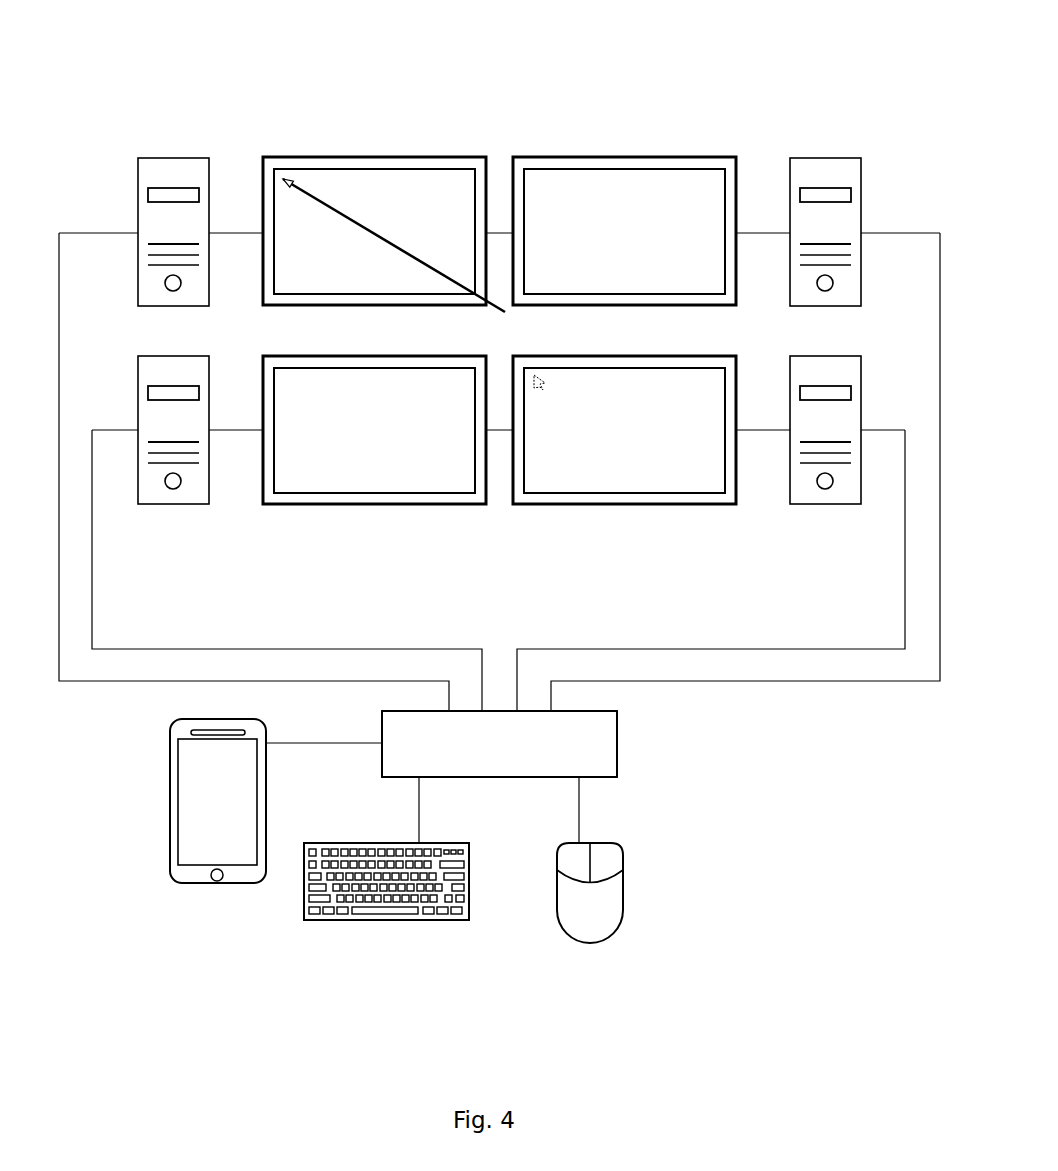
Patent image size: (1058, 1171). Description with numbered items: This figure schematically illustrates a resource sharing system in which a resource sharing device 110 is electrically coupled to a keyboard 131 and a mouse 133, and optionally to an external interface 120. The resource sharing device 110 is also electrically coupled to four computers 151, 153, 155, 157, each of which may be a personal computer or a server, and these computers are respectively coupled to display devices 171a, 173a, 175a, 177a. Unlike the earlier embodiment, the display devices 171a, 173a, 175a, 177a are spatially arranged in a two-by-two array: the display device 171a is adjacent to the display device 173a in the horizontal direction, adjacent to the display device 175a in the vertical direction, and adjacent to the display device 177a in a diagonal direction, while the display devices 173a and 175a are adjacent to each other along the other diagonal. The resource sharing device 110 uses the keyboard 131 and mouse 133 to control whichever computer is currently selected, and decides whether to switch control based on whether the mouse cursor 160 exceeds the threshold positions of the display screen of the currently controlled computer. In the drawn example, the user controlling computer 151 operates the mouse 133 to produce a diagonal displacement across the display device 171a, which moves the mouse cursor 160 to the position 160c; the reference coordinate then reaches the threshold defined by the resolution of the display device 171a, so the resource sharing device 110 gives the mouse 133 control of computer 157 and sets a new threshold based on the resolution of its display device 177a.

The resource sharing device 110 is at (530, 765).
The external interface 120 is at (195, 888).
The keyboard 131 is at (340, 920).
The mouse 133 is at (623, 892).
The computer 151 is at (173, 158).
The computer 153 is at (828, 158).
The computer 155 is at (168, 506).
The computer 157 is at (823, 506).
The display device 171a is at (375, 158).
The display device 173a is at (628, 158).
The display device 175a is at (373, 506).
The display device 177a is at (623, 506).
The mouse cursor 160 is at (300, 158).
The position of mouse cursor 160c is at (538, 376).